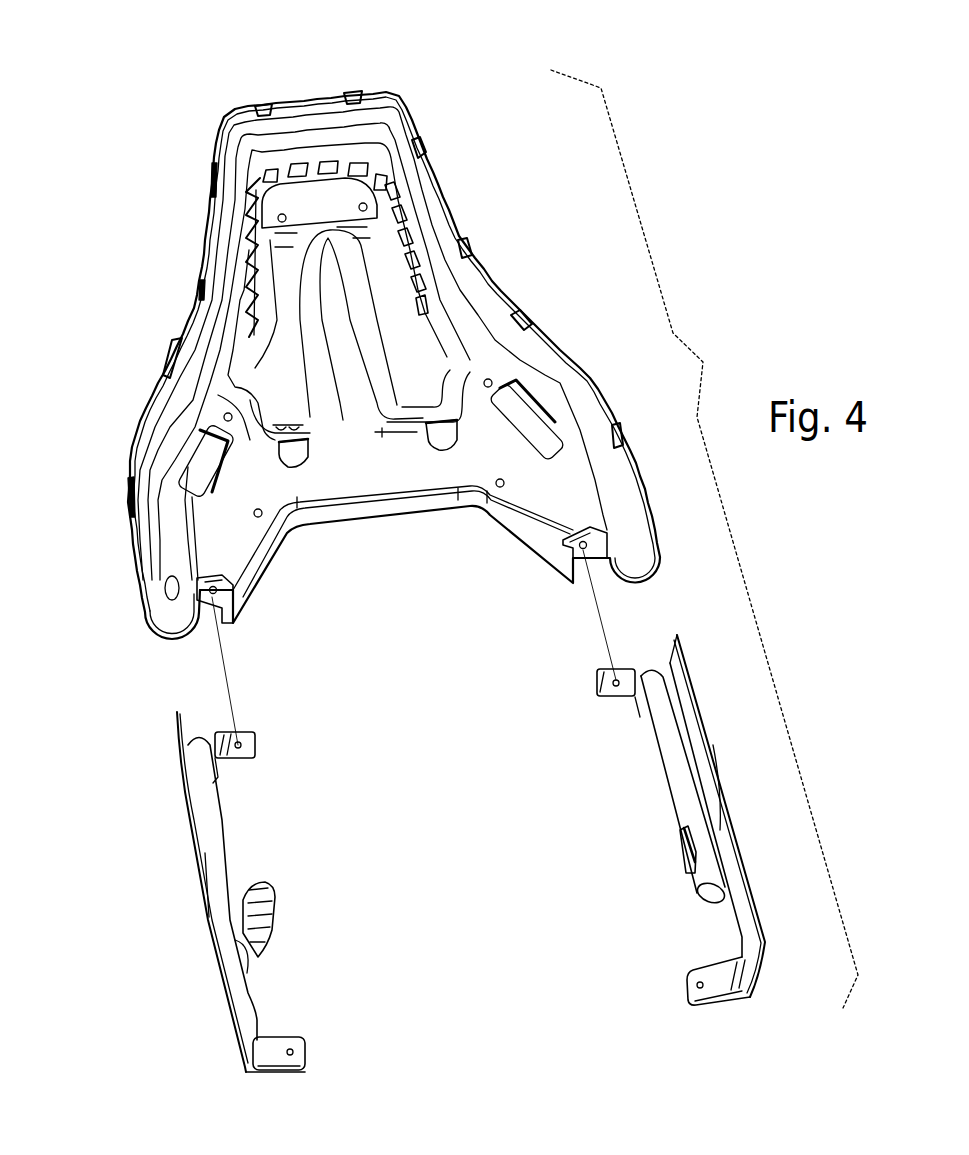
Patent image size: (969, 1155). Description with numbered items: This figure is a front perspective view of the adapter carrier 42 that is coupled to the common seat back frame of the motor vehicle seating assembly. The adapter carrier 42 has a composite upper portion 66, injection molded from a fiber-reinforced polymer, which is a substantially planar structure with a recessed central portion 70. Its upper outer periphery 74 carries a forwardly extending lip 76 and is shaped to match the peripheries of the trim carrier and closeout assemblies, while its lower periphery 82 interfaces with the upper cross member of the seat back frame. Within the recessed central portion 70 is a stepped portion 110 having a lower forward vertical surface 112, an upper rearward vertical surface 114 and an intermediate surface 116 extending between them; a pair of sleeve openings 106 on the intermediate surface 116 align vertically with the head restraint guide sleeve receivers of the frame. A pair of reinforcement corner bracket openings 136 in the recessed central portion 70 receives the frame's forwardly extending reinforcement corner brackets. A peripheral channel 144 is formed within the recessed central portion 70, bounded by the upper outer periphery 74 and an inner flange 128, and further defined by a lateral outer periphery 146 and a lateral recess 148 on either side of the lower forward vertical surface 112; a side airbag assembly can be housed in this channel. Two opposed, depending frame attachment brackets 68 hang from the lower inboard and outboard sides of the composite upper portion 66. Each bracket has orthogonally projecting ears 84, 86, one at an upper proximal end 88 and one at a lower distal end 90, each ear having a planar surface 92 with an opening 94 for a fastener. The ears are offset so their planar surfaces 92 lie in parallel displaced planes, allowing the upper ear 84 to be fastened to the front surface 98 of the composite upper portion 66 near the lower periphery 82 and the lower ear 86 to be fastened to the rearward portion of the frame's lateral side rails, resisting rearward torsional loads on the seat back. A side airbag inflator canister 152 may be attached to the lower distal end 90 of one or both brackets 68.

The adapter carrier 42 is at (705, 362).
The composite upper portion 66 is at (398, 100).
The frame attachment brackets 68 is at (470, 858).
The recessed central portion 70 is at (285, 312).
The upper outer periphery 74 is at (315, 95).
The forwardly extending lip 76 is at (577, 357).
The lower periphery 82 is at (340, 513).
The projecting ear 84 is at (252, 740).
The projecting ear 86 is at (275, 1073).
The upper proximal end 88 is at (182, 757).
The lower distal end 90 is at (242, 1027).
The planar surface 92 is at (505, 858).
The opening 94 is at (240, 752).
The front surface 98 is at (543, 513).
The sleeve openings 106 is at (287, 473).
The stepped portion 110 is at (365, 420).
The lower forward vertical surface 112 is at (243, 482).
The upper rearward vertical surface 114 is at (430, 347).
The intermediate surface 116 is at (402, 515).
The inner flange 128 is at (277, 172).
The reinforcement corner bracket openings 136 is at (545, 432).
The peripheral channel 144 is at (412, 197).
The lateral outer periphery 146 is at (135, 565).
The lateral recess 148 is at (615, 500).
The side airbag inflator canister 152 is at (220, 835).